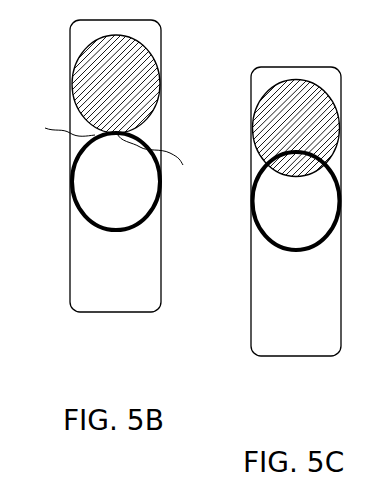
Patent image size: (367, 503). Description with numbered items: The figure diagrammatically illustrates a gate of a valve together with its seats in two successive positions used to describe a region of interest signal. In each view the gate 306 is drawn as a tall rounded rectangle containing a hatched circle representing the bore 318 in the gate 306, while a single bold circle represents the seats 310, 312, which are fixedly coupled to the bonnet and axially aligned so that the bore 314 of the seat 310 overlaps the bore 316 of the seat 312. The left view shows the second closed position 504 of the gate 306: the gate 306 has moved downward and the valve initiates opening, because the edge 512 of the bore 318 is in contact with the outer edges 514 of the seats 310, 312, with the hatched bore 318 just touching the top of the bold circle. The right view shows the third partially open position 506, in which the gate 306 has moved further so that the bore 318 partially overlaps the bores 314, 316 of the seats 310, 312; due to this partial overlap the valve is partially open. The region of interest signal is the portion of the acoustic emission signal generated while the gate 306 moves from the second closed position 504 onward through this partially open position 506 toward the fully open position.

In FIG. 5B, the gate 306 is at (115, 312).
In FIG. 5C, the gate 306 is at (295, 356).
In FIG. 5B, the seat 310 is at (116, 208).
In FIG. 5C, the seat 310 is at (296, 233).
In FIG. 5B, the seat 312 is at (116, 208).
In FIG. 5C, the seat 312 is at (296, 233).
In FIG. 5B, the bore 314 is at (116, 181).
In FIG. 5C, the bore 314 is at (296, 201).
In FIG. 5B, the bore 316 is at (130, 181).
In FIG. 5C, the bore 316 is at (310, 209).
In FIG. 5B, the bore 318 is at (132, 95).
In FIG. 5C, the bore 318 is at (312, 138).
In FIG. 5B, the second closed position 504 is at (68, 322).
In FIG. 5C, the third partially open position 506 is at (248, 367).
In FIG. 5B, the edge 512 is at (164, 159).
In FIG. 5B, the outer edges 514 is at (62, 122).